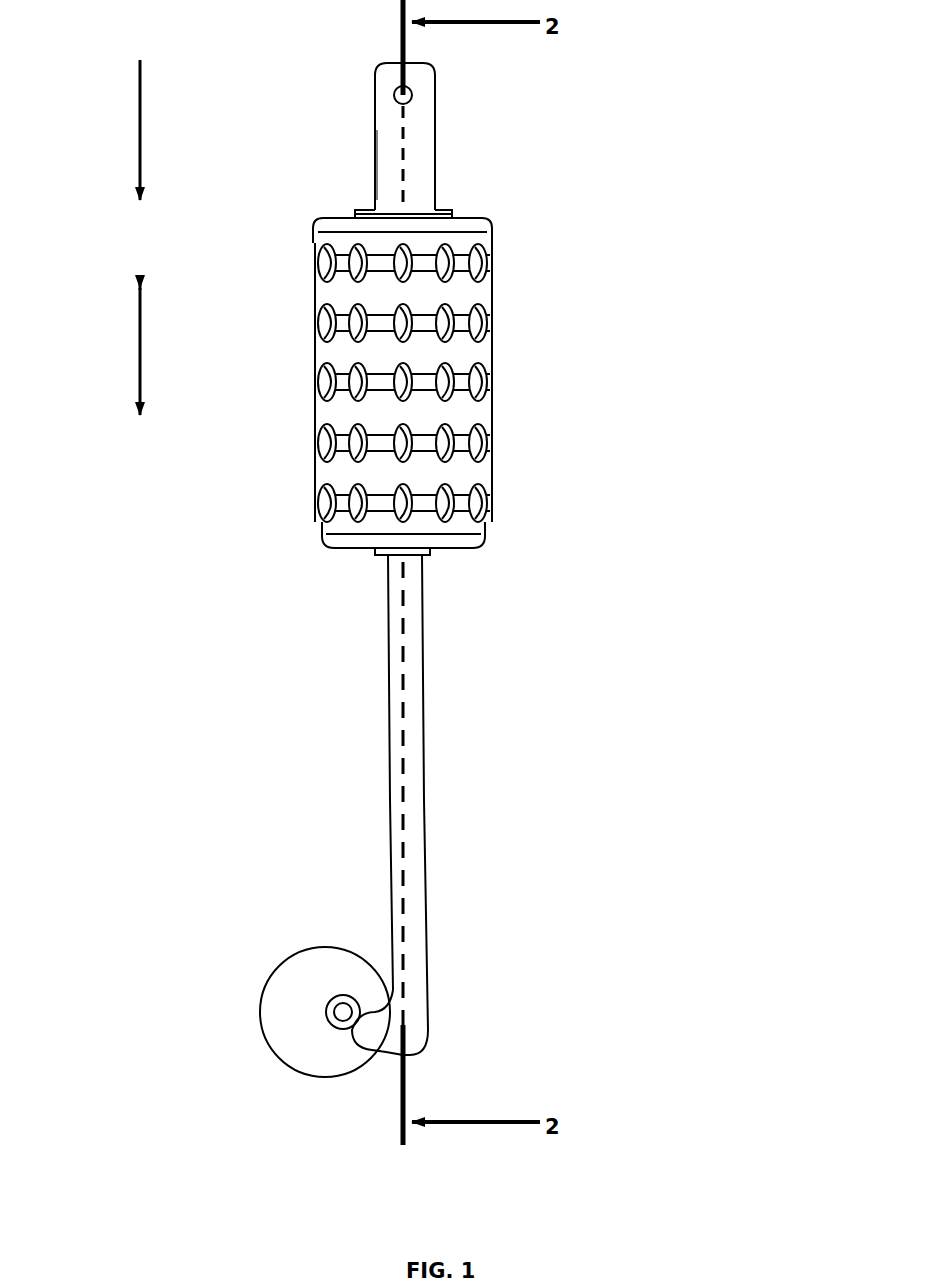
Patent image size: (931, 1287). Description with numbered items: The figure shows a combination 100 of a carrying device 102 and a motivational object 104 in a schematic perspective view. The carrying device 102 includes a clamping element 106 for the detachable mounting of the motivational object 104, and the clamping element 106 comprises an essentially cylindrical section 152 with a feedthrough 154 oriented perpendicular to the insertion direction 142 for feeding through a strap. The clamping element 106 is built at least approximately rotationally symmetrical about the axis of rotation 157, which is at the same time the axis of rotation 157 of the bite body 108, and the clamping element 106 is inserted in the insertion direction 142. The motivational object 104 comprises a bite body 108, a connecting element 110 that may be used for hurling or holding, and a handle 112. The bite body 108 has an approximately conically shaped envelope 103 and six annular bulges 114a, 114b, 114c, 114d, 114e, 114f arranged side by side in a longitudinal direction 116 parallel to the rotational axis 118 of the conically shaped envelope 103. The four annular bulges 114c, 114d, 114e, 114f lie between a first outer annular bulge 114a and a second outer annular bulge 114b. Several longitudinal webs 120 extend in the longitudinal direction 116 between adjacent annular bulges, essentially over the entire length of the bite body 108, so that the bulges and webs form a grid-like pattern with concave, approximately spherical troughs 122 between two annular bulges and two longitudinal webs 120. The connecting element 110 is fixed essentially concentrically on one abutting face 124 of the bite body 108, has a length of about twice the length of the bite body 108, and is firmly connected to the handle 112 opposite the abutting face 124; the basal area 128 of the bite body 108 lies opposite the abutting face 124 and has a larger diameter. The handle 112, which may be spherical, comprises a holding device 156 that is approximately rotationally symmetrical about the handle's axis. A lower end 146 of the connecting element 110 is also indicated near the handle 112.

The combination 100 is at (730, 218).
The carrying device 102 is at (412, 136).
The conically shaped envelope 103 is at (420, 391).
The motivational object 104 is at (476, 396).
The clamping element 106 is at (416, 140).
The bite body 108 is at (320, 234).
The connecting element 110 is at (444, 831).
The handle 112 is at (292, 1021).
The first outer annular bulge 114a is at (490, 528).
The second outer annular bulge 114b is at (492, 240).
The annular bulge 114c is at (492, 468).
The annular bulge 114d is at (492, 410).
The annular bulge 114e is at (492, 353).
The annular bulge 114f is at (492, 297).
The longitudinal direction 116 is at (137, 335).
The rotational axis 118 is at (410, 1060).
The longitudinal web 120 is at (455, 443).
The trough 122 is at (330, 325).
The abutting face 124 is at (438, 560).
The basal area 128 is at (355, 212).
The insertion direction 142 is at (137, 125).
The hook end 146 is at (410, 1052).
The cylindrical section 152 is at (375, 130).
The feedthrough 154 is at (413, 96).
The holding device 156 is at (300, 1048).
The axis of rotation 157 is at (405, 841).